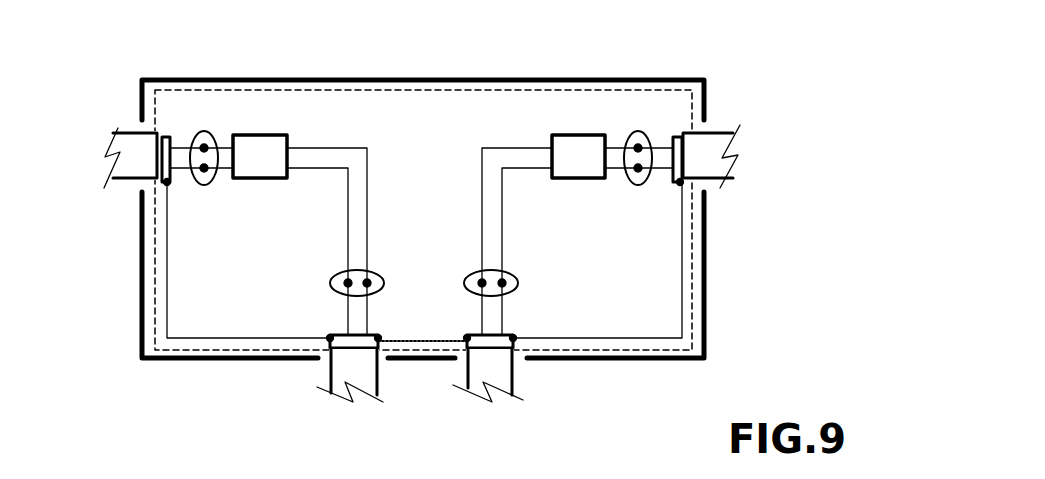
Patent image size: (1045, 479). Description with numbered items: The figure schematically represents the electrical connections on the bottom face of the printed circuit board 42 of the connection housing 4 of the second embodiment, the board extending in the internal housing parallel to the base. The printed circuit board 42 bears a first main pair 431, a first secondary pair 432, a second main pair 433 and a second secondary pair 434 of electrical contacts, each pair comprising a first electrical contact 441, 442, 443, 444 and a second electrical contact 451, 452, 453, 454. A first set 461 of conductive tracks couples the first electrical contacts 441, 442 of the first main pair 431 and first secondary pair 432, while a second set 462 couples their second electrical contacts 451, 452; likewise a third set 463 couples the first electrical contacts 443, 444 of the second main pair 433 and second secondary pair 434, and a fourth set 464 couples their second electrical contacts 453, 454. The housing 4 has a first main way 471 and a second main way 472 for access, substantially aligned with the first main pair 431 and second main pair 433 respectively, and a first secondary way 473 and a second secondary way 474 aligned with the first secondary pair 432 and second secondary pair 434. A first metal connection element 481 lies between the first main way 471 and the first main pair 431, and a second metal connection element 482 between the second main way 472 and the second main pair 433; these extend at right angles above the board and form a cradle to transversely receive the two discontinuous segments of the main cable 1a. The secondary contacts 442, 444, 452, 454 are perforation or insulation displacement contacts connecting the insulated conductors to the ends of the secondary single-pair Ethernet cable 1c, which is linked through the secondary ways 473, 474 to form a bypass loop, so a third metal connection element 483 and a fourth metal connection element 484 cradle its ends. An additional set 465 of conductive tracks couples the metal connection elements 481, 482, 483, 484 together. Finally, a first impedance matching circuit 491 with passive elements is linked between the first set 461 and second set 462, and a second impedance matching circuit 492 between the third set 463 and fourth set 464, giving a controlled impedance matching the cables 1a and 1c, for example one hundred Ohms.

The main cable 1a is at (422, 139).
The secondary single-pair Ethernet cable 1c is at (435, 399).
The connection housing 4 is at (133, 300).
The printed circuit board 42 is at (695, 272).
The first main pair of electrical contacts 431 is at (198, 138).
The first secondary pair of electrical contacts 432 is at (358, 285).
The second main pair of electrical contacts 433 is at (639, 131).
The second secondary pair of electrical contacts 434 is at (515, 257).
The first electrical contact of the first main pair 441 is at (207, 145).
The first electrical contact of the first secondary pair 442 is at (372, 293).
The first electrical contact of the second main pair 443 is at (632, 142).
The first electrical contact of the second secondary pair 444 is at (480, 279).
The second electrical contact of the first main pair 451 is at (205, 170).
The second electrical contact of the first secondary pair 452 is at (332, 280).
The second electrical contact of the second main pair 453 is at (640, 178).
The second electrical contact of the second secondary pair 454 is at (502, 279).
The first set of conductive tracks 461 is at (360, 147).
The second set of conductive tracks 462 is at (347, 192).
The third set of conductive tracks 463 is at (483, 147).
The fourth set of conductive tracks 464 is at (505, 188).
The additional set of conductive tracks 465 is at (615, 340).
The first main way for access to the housing 471 is at (138, 188).
The second main way for access to the housing 472 is at (704, 185).
The first secondary way for access to the housing 473 is at (327, 357).
The second secondary way for access to the housing 474 is at (463, 358).
The first metal connection element 481 is at (166, 183).
The second metal connection element 482 is at (677, 183).
The third metal connection element 483 is at (330, 336).
The fourth metal connection element 484 is at (513, 336).
The first impedance matching circuit 491 is at (273, 138).
The second impedance matching circuit 492 is at (565, 142).